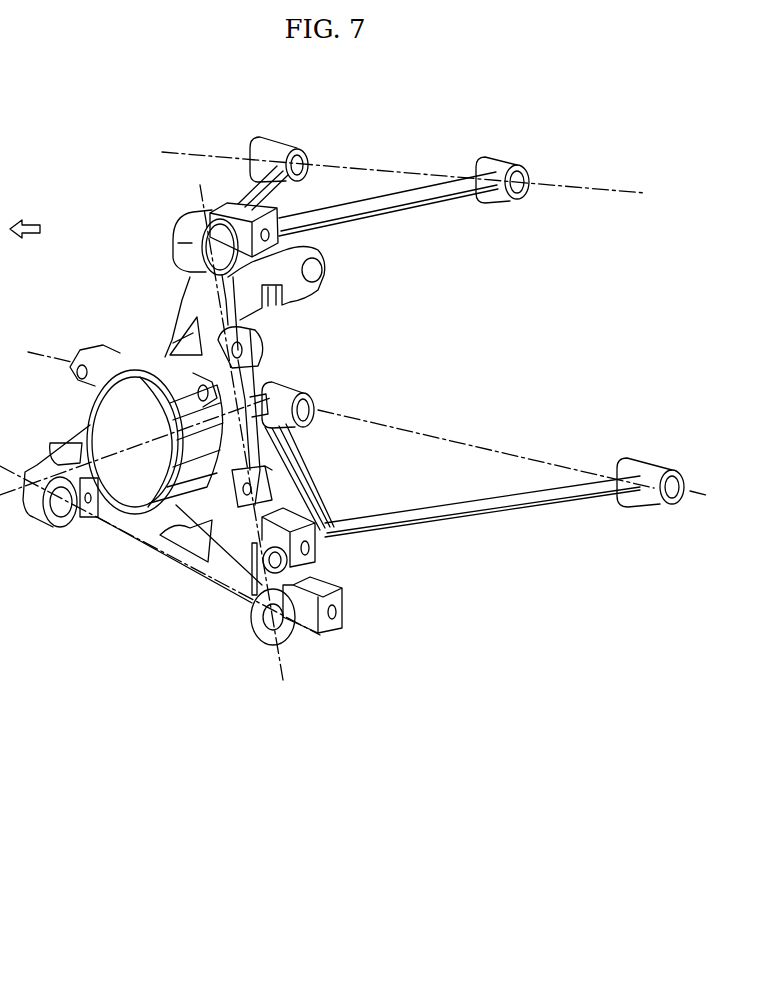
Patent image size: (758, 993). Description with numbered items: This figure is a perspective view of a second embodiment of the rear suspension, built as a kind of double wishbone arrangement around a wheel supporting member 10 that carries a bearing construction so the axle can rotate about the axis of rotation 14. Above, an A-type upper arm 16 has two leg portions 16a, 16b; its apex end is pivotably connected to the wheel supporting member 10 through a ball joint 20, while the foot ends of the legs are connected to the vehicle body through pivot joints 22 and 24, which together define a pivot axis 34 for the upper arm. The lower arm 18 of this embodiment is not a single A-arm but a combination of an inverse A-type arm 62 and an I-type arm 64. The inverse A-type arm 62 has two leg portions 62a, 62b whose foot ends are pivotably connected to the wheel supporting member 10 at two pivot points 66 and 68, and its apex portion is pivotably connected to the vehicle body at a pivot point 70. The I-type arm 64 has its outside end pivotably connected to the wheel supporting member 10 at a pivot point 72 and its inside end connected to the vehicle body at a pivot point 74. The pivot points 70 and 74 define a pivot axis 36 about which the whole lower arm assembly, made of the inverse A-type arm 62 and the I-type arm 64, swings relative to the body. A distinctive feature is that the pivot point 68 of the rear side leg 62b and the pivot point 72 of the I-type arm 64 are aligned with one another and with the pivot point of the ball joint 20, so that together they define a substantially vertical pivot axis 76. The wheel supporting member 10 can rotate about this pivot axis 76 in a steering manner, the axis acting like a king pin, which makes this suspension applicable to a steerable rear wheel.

The wheel supporting member 10 is at (171, 435).
The axis of rotation 14 is at (88, 414).
The A-type upper arm 16 is at (364, 178).
The leg portion 16a is at (252, 190).
The leg portion 16b is at (372, 205).
The lower arm 18 is at (467, 468).
The ball joint 20 is at (211, 428).
The pivot joint 22 is at (287, 165).
The pivot joint 24 is at (503, 158).
The pivot axis 34 is at (604, 193).
The pivot axis 36 is at (538, 445).
The inverse A-type arm 62 is at (311, 468).
The leg portion 62a is at (256, 400).
The rear side leg 62b is at (306, 440).
The I-type arm 64 is at (485, 531).
The pivot point 66 is at (53, 522).
The pivot point 68 is at (260, 622).
The pivot point 70 is at (310, 394).
The pivot point 72 is at (262, 556).
The pivot point 74 is at (656, 500).
The pivot axis 76 is at (206, 212).